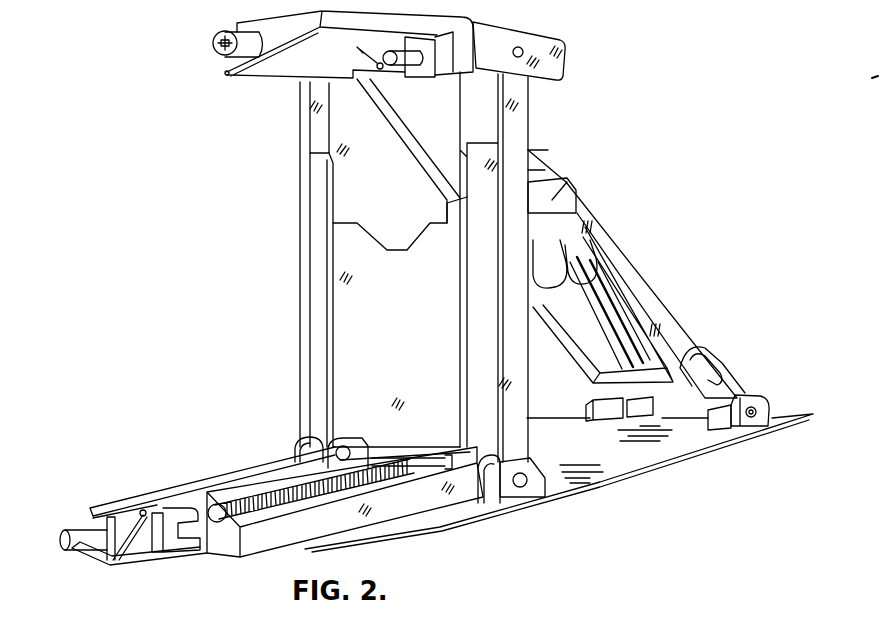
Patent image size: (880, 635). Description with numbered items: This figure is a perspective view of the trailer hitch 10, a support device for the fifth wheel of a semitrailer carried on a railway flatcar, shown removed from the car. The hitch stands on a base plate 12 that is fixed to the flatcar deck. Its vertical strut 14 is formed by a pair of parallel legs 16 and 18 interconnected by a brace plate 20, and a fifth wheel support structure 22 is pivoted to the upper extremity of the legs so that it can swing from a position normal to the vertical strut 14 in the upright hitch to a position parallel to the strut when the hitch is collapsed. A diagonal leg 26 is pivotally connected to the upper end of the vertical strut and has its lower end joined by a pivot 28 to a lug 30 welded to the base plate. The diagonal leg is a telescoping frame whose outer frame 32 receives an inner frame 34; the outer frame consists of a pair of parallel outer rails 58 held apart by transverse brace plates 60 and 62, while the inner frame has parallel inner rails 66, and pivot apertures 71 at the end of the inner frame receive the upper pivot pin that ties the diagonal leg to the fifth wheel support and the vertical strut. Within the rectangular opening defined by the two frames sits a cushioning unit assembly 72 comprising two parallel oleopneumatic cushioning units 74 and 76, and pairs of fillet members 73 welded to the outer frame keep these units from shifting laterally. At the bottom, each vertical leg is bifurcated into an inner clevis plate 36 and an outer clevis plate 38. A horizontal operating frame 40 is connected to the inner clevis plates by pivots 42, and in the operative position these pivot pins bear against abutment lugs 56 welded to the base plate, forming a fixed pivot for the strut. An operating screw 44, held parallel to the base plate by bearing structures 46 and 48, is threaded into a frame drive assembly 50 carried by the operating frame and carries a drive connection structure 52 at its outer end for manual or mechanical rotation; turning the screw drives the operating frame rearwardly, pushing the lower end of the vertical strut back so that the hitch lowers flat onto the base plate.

The trailer hitch 10 is at (299, 292).
The base plate 12 is at (632, 460).
The vertical strut 14 is at (310, 232).
The leg 16 is at (313, 136).
The leg 18 is at (523, 117).
The brace plate 20 is at (414, 349).
The fifth wheel support structure 22 is at (548, 48).
The diagonal leg 26 is at (643, 268).
The pivot 28 is at (757, 403).
The lug 30 is at (777, 413).
The outer frame 32 is at (641, 299).
The inner frame 34 is at (540, 172).
The inner clevis plate 36 is at (338, 443).
The outer clevis plate 38 is at (528, 473).
The horizontal operating frame 40 is at (231, 552).
The pivot 42 is at (523, 485).
The operating screw 44 is at (245, 503).
The bearing structure 46 is at (138, 554).
The bearing structure 48 is at (415, 456).
The frame drive assembly 50 is at (184, 508).
The drive connection structure 52 is at (70, 552).
The abutment lug 56 is at (300, 440).
The outer rail 58 is at (673, 336).
The transverse brace plate 60 is at (550, 222).
The transverse brace plate 62 is at (663, 398).
The inner rail 66 is at (426, 160).
The pivot aperture 71 is at (512, 42).
The cushioning unit assembly 72 is at (550, 262).
The fillet member 73 is at (598, 372).
The oleopneumatic cushioning unit 74 is at (571, 316).
The oleopneumatic cushioning unit 76 is at (610, 321).